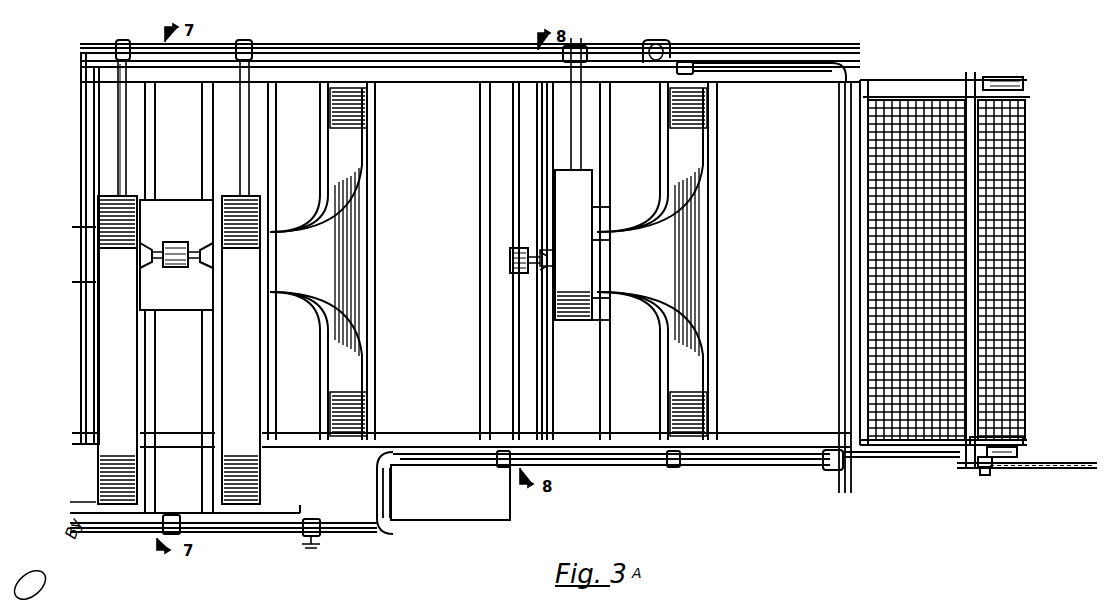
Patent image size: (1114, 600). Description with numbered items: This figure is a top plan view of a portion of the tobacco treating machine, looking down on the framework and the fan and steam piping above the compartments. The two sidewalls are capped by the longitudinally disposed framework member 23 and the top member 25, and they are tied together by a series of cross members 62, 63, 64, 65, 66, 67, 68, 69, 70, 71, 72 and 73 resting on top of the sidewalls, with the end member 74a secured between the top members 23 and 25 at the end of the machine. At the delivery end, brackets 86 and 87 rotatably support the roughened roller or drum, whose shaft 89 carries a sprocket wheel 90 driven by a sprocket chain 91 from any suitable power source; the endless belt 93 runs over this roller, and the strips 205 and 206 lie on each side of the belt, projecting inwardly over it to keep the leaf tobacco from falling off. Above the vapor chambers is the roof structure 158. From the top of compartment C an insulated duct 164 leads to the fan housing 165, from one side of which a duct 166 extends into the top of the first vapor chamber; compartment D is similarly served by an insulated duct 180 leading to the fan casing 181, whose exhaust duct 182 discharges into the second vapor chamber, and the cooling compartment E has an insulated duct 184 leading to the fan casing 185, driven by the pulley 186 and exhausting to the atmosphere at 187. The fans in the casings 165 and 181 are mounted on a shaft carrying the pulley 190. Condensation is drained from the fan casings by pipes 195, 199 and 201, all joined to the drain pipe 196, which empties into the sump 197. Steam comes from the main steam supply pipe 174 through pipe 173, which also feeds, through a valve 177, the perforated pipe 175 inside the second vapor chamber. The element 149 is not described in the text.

The longitudinally disposed framework member 23 is at (927, 80).
The top member 25 is at (902, 457).
The cross member 62 is at (88, 122).
The cross member 63 is at (152, 138).
The cross member 64 is at (206, 148).
The cross member 65 is at (278, 146).
The cross member 66 is at (318, 86).
The cross member 67 is at (376, 84).
The cross member 68 is at (480, 117).
The cross member 69 is at (536, 134).
The cross member 70 is at (606, 118).
The cross member 71 is at (660, 86).
The cross member 72 is at (714, 90).
The cross member 73 is at (862, 80).
The end member 74a is at (970, 72).
The bracket 86 is at (1020, 453).
The bracket 87 is at (1006, 82).
The shaft 89 is at (986, 477).
The sprocket wheel 90 is at (976, 472).
The sprocket chain 91 is at (1038, 474).
The endless belt 93 is at (1028, 154).
The pipe 149 is at (787, 52).
The roof structure 158 is at (82, 492).
The insulated duct 164 is at (82, 254).
The fan housing 165 is at (110, 196).
The duct 166 is at (117, 350).
The pipe 173 is at (708, 466).
The main steam supply pipe 174 is at (836, 292).
The perforated pipe 175 is at (236, 538).
The valve 177 is at (314, 552).
The insulated duct 180 is at (362, 270).
The fan casing 181 is at (234, 196).
The exhaust duct 182 is at (241, 350).
The insulated duct 184 is at (700, 270).
The fan casing 185 is at (558, 320).
The pulley 186 is at (518, 248).
The exhaust 187 is at (582, 245).
The pulley 190 is at (190, 240).
The pipe 195 is at (108, 160).
The drain pipe 196 is at (467, 36).
The sump 197 is at (660, 40).
The pipe 199 is at (248, 40).
The drain pipe 201 is at (124, 40).
The strip 205 is at (1024, 438).
The strip 206 is at (1030, 100).